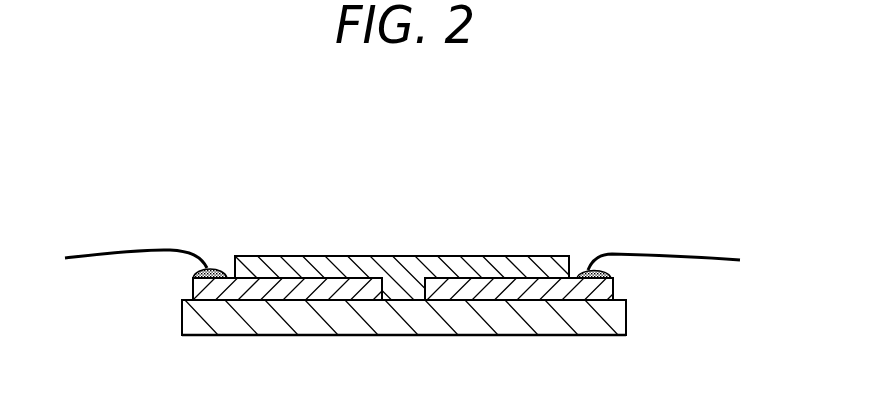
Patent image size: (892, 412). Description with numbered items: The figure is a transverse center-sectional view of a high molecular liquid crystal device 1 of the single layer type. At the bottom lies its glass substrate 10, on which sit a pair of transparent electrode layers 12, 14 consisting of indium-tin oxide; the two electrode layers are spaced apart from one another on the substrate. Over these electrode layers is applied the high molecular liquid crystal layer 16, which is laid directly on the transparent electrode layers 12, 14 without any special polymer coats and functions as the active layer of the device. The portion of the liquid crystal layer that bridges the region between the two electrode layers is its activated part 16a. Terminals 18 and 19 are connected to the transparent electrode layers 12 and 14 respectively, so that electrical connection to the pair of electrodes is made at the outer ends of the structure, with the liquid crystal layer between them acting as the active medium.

The high molecular liquid crystal device 1 is at (462, 197).
The glass substrate 10 is at (548, 325).
The transparent electrode layer 12 is at (208, 288).
The transparent electrode layer 14 is at (608, 290).
The high molecular liquid crystal layer 16 is at (500, 268).
The activated part 16a is at (402, 287).
The terminal 18 is at (118, 250).
The terminal 19 is at (673, 255).